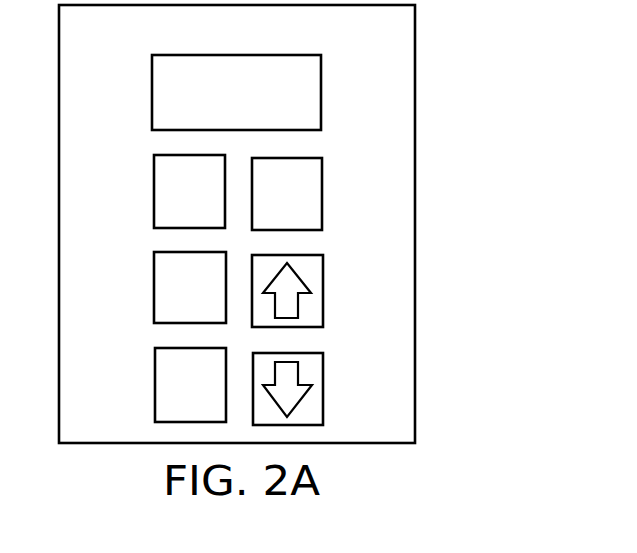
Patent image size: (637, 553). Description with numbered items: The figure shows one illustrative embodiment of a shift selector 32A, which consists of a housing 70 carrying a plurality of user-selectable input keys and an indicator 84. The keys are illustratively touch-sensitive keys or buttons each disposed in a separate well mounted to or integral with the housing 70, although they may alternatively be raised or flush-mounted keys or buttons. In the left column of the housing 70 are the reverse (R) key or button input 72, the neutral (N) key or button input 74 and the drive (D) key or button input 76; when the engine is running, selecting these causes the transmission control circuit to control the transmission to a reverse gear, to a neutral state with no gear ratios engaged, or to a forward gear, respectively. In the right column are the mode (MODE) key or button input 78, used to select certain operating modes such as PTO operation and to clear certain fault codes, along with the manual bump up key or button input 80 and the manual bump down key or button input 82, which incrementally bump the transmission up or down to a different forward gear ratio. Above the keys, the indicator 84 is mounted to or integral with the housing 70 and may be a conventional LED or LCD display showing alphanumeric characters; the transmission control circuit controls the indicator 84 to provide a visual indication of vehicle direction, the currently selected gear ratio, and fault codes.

The housing 70 is at (415, 209).
The shift selector 32A is at (417, 317).
The indicator 84 is at (321, 90).
The reverse (R) key or button input 72 is at (154, 170).
The mode (MODE) key or button input 78 is at (322, 172).
The neutral (N) key or button input 74 is at (154, 268).
The manual bump up (↑) key or button input 80 is at (323, 272).
The drive (D) key or button input 76 is at (155, 366).
The manual bump down (↓) key or button input 82 is at (323, 370).